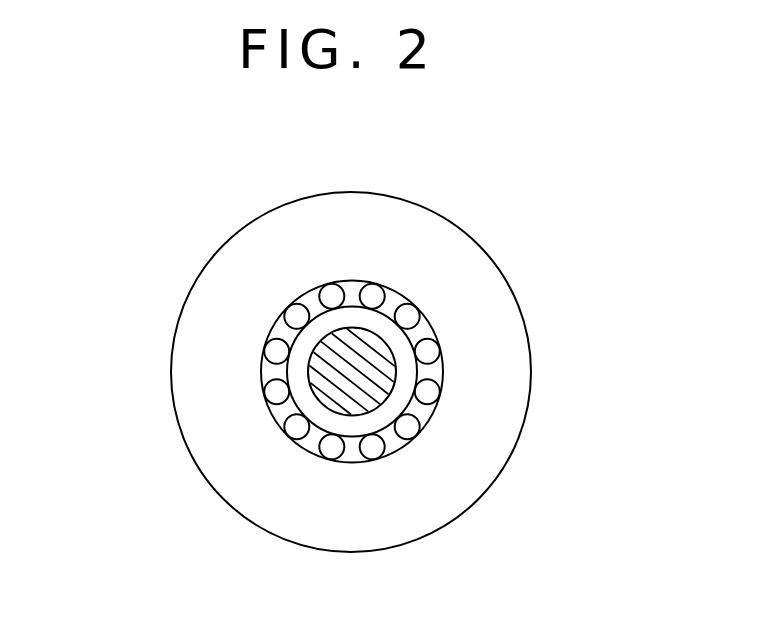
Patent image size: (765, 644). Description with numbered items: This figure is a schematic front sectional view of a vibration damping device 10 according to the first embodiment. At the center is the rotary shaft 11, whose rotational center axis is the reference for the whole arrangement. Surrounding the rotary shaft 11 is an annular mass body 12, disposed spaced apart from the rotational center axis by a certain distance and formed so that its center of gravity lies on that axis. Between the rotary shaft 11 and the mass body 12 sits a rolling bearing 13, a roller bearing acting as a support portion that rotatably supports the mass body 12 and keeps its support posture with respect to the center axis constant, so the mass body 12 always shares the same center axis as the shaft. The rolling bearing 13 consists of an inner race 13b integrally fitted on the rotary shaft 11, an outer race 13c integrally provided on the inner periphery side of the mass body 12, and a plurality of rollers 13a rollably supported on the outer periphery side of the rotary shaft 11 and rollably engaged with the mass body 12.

The vibration damping device 10 is at (433, 168).
The rotary shaft 11 is at (352, 412).
The mass body 12 is at (323, 194).
The rolling bearing 13 is at (275, 318).
The rollers 13a is at (388, 290).
The inner race 13b is at (292, 394).
The outer race 13c is at (263, 362).